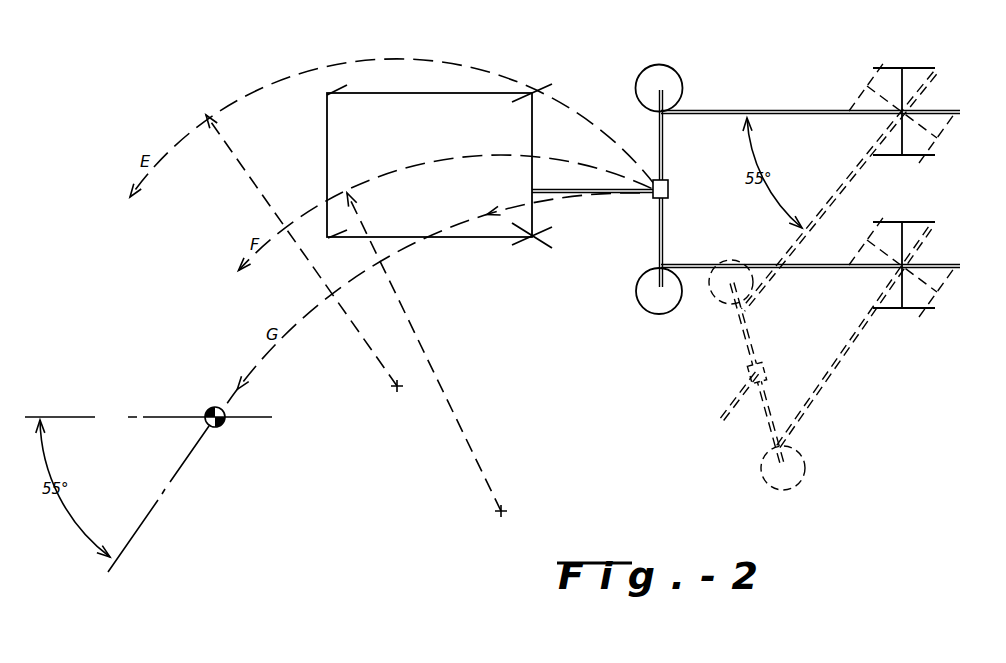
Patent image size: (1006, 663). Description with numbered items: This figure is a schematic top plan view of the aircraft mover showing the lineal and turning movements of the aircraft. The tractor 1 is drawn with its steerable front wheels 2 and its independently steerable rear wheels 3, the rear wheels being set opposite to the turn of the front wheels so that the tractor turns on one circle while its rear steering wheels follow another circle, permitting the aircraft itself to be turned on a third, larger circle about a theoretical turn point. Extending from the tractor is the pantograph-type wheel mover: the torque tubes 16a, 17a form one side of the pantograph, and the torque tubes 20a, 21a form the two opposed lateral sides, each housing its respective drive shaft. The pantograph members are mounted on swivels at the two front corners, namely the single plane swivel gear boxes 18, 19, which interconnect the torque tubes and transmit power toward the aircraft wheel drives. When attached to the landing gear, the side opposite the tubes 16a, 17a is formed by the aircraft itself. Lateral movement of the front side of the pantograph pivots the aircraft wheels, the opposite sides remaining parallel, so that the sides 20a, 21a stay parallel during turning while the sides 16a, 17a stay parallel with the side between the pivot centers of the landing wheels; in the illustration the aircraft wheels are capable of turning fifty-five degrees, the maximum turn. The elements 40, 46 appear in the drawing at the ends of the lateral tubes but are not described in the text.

The tractor 1 is at (441, 155).
The front wheels 2 is at (328, 94).
The rear wheels 3 is at (541, 91).
The torque tube 16a is at (663, 153).
The torque tube 17a is at (663, 233).
The single plane swivel gear box 18 is at (667, 78).
The single plane swivel gear box 19 is at (644, 301).
The torque tube 20a is at (790, 110).
The torque tube 21a is at (808, 269).
The mounting plate 40 is at (872, 84).
The pivot mounting 46 is at (930, 84).